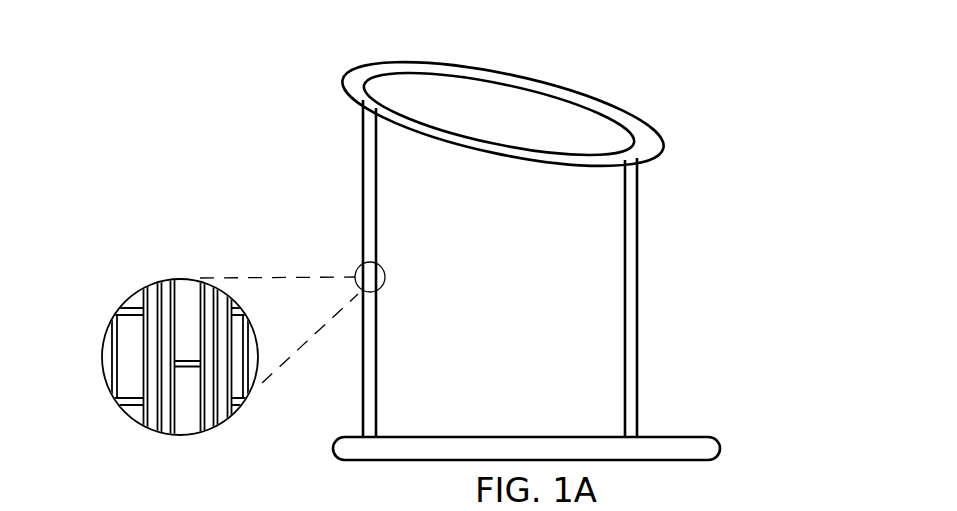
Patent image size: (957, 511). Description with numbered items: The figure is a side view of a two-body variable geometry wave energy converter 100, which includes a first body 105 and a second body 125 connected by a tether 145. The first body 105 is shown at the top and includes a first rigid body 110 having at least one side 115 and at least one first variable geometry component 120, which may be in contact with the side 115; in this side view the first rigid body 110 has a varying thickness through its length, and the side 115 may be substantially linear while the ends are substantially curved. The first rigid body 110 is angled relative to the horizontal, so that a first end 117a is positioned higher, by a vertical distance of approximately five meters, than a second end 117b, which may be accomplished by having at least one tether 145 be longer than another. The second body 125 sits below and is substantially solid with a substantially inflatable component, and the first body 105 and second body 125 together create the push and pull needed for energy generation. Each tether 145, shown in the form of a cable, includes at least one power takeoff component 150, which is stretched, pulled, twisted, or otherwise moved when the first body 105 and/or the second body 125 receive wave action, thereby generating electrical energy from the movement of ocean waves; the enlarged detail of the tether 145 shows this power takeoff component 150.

The two-body variable geometry wave energy converter 100 is at (222, 135).
The first body 105 is at (620, 73).
The first rigid body 110 is at (585, 152).
The side 115 is at (627, 155).
The first end 117a is at (342, 75).
The second end 117b is at (672, 162).
The first variable geometry component 120 is at (533, 118).
The second body 125 is at (728, 445).
The tether 145 is at (633, 252).
The power takeoff component 150 is at (125, 350).